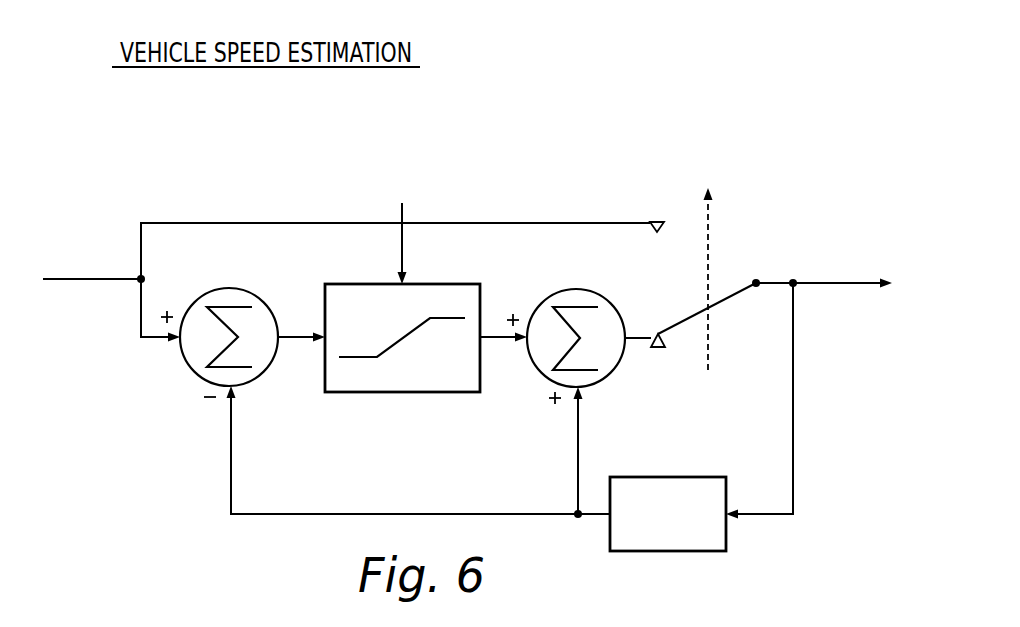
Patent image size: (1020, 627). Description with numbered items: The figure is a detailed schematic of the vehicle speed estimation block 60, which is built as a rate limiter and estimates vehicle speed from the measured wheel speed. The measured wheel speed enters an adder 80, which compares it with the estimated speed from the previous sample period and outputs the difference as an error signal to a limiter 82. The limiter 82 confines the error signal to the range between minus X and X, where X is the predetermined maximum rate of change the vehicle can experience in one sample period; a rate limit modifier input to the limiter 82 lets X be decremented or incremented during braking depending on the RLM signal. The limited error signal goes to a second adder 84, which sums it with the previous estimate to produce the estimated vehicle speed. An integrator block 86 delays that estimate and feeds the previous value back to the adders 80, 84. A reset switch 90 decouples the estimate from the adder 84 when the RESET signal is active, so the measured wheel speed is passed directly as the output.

The vehicle speed estimation block 60 is at (118, 450).
The adder 80 is at (266, 301).
The limiter 82 is at (440, 284).
The adder 84 is at (607, 302).
The integrator block 86 is at (665, 477).
The reset switch 90 is at (755, 221).